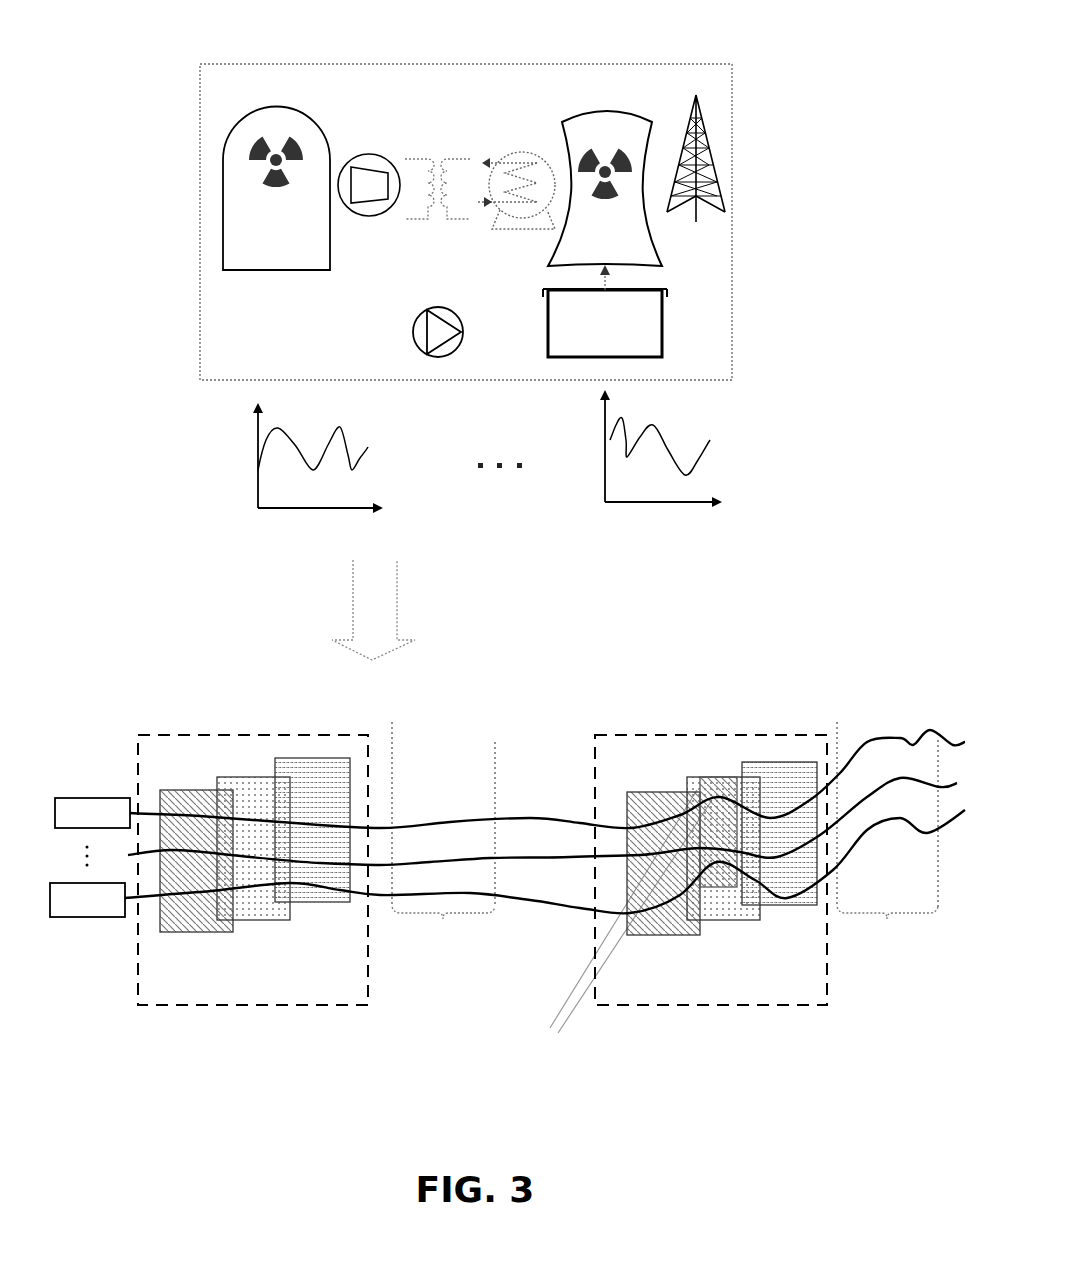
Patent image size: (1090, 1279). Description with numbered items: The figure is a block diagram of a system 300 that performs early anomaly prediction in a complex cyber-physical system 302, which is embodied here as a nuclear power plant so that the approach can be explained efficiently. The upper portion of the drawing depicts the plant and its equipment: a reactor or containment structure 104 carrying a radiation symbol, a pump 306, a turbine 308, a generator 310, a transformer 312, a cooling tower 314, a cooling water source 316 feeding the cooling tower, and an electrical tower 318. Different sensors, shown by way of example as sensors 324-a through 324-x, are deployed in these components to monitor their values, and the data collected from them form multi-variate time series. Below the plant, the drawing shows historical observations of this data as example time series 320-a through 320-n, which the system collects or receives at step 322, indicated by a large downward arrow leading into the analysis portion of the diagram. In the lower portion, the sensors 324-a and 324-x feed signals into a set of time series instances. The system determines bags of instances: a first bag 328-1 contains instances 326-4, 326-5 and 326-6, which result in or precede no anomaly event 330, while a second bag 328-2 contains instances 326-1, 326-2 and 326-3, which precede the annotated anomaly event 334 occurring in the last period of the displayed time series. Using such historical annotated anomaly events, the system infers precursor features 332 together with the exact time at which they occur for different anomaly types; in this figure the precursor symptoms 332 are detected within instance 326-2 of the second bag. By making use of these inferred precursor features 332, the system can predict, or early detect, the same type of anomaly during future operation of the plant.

The system 300 is at (507, 537).
The complex cyber-physical system 302 is at (466, 222).
The reactor 104 is at (276, 188).
The pump 306 is at (440, 308).
The turbine 308 is at (369, 155).
The generator 310 is at (472, 157).
The transformer 312 is at (502, 152).
The cooling tower 314 is at (605, 188).
The cooling water source 316 is at (605, 311).
The electrical tower 318 is at (687, 128).
The time series data 320-a is at (290, 515).
The time series data 320-n is at (672, 507).
The collection of historical observation 322 is at (398, 602).
The sensor 324-a is at (92, 813).
The sensor 324-x is at (87, 900).
The instance 326-1 is at (782, 905).
The instance 326-2 is at (722, 920).
The instance 326-3 is at (661, 885).
The instance 326-4 is at (313, 902).
The instance 326-5 is at (255, 920).
The instance 326-6 is at (197, 932).
The bag 328-1 is at (253, 892).
The bag 328-2 is at (711, 892).
The no anomaly event 330 is at (443, 920).
The precursor features 332 is at (622, 924).
The annotated anomaly event 334 is at (887, 920).